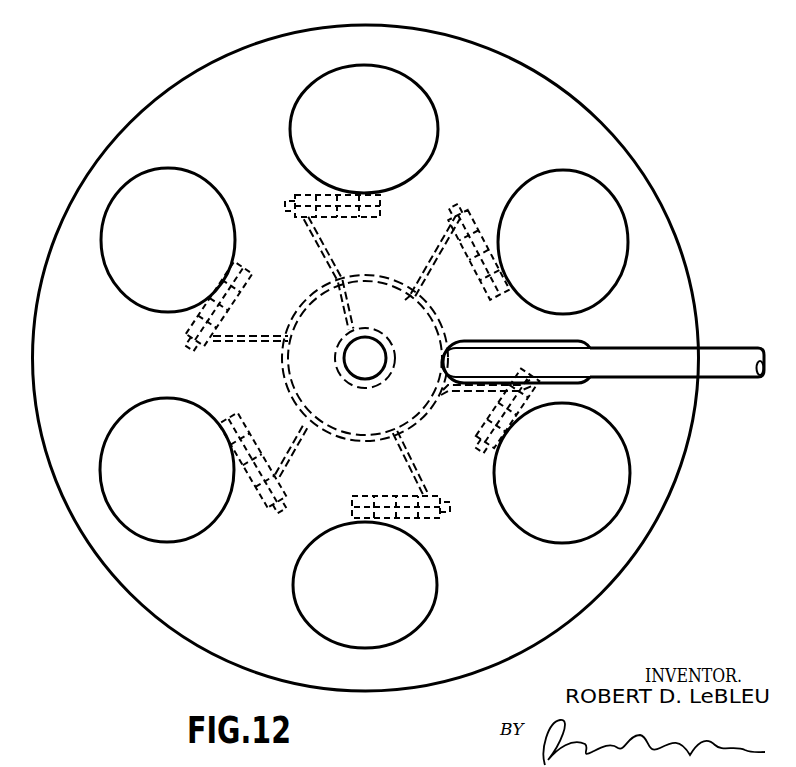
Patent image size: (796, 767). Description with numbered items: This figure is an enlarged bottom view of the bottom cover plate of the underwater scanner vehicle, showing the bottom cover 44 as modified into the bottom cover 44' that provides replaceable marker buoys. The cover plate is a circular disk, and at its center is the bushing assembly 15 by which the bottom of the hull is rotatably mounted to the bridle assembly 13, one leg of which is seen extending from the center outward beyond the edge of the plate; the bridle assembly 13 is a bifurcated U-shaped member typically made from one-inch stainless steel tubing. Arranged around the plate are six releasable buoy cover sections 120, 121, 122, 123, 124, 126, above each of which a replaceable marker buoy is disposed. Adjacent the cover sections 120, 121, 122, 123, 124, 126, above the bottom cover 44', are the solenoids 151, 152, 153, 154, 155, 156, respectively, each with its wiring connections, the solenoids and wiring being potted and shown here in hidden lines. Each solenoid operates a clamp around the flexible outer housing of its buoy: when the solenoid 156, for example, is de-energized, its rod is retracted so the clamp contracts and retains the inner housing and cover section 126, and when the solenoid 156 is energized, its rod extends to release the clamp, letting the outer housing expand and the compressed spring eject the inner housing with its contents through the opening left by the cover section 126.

The bridle assembly 13 is at (710, 348).
The bushing assembly 15 is at (402, 360).
The bottom cover 44 is at (371, 358).
The bottom cover 44' is at (516, 349).
The releasable buoy cover section 120 is at (372, 65).
The releasable buoy cover section 121 is at (190, 168).
The releasable buoy cover section 122 is at (168, 398).
The releasable buoy cover section 123 is at (294, 572).
The releasable buoy cover section 124 is at (497, 524).
The releasable buoy cover section 126 is at (572, 170).
The solenoid 151 is at (338, 218).
The solenoid 152 is at (464, 263).
The solenoid 153 is at (488, 407).
The solenoid 154 is at (408, 479).
The solenoid 155 is at (269, 445).
The solenoid 156 is at (238, 312).